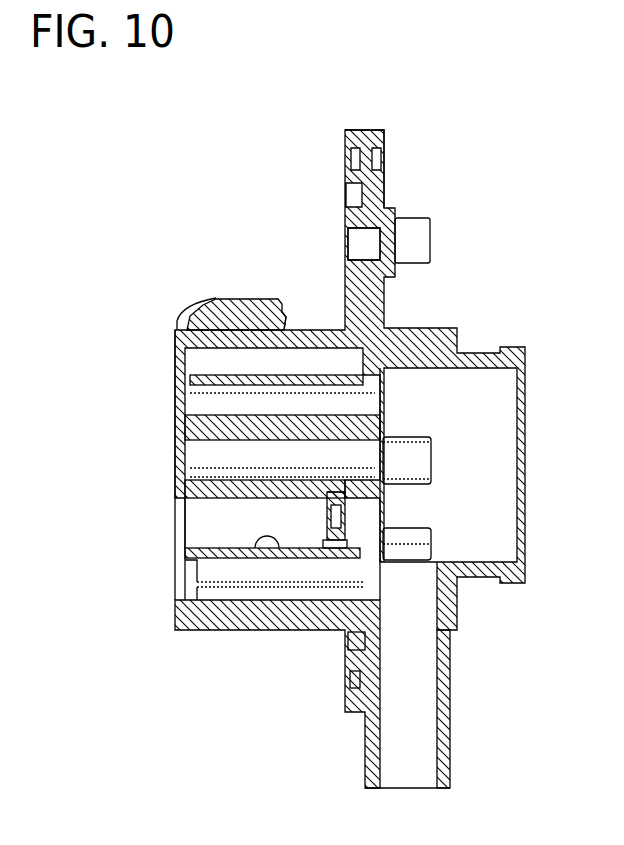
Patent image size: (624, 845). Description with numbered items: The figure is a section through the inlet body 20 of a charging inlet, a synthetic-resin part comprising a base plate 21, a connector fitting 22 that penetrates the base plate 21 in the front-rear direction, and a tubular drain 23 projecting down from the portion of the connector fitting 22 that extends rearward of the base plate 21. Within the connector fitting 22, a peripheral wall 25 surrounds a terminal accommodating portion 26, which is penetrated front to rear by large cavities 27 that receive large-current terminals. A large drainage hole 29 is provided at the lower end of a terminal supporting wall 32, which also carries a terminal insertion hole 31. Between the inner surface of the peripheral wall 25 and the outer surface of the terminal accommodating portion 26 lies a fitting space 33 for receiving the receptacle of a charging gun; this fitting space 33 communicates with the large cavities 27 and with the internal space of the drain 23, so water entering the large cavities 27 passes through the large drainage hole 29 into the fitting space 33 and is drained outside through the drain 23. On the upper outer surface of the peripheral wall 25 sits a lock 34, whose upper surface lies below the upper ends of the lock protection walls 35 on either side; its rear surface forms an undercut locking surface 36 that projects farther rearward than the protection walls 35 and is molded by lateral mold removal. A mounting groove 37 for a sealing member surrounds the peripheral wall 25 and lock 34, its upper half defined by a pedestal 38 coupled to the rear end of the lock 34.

The inlet body 20 is at (370, 100).
The base plate 21 is at (363, 130).
The connector fitting 22 is at (153, 707).
The drain 23 is at (444, 722).
The peripheral wall 25 is at (175, 624).
The terminal accommodating portion 26 is at (176, 482).
The large cavities 27 is at (276, 556).
The large drainage hole 29 is at (332, 548).
The terminal insertion hole 31 is at (335, 522).
The terminal supporting wall 32 is at (340, 497).
The fitting space 33 is at (240, 588).
The lock 34 is at (262, 300).
The lock protection walls 35 is at (242, 299).
The locking surface 36 is at (286, 318).
The mounting groove 37 is at (356, 200).
The pedestal 38 is at (338, 303).